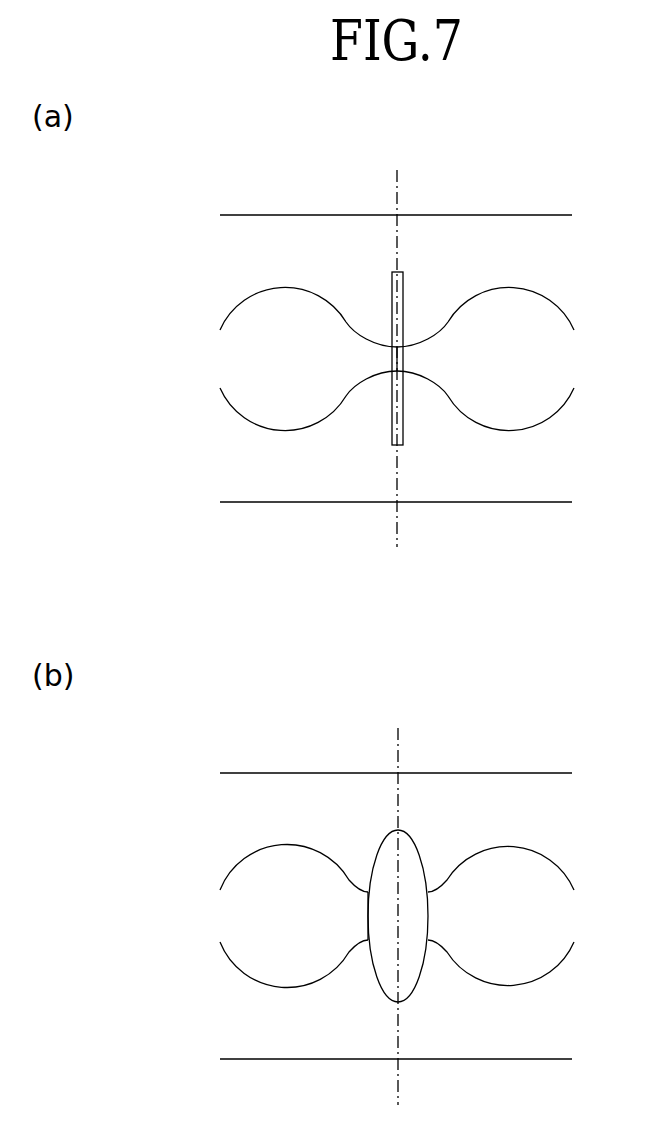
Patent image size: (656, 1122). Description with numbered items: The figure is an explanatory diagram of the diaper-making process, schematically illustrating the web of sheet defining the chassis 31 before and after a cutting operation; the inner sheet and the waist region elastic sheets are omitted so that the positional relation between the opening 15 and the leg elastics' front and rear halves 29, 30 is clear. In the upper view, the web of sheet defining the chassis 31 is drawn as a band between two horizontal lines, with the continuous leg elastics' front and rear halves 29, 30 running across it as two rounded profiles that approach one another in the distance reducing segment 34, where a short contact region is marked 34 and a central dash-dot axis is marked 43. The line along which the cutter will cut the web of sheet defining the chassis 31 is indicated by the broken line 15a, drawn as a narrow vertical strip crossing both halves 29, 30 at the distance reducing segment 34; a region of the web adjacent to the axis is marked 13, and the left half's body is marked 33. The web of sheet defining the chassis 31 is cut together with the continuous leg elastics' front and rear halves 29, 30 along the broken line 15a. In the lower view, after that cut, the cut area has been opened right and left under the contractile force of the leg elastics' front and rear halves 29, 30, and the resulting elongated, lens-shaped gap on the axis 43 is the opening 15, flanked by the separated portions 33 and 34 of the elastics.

The welding region / plate 13 is at (445, 238).
The opening 15 is at (376, 964).
The broken line 15a is at (405, 425).
The leg elastics' front half 29 is at (531, 291).
The leg elastics' rear half 30 is at (531, 428).
The chassis 31 is at (537, 197).
The first electrode tip 33 is at (307, 289).
The distance reducing segment 34 is at (386, 344).
The center axis 43 is at (396, 187).